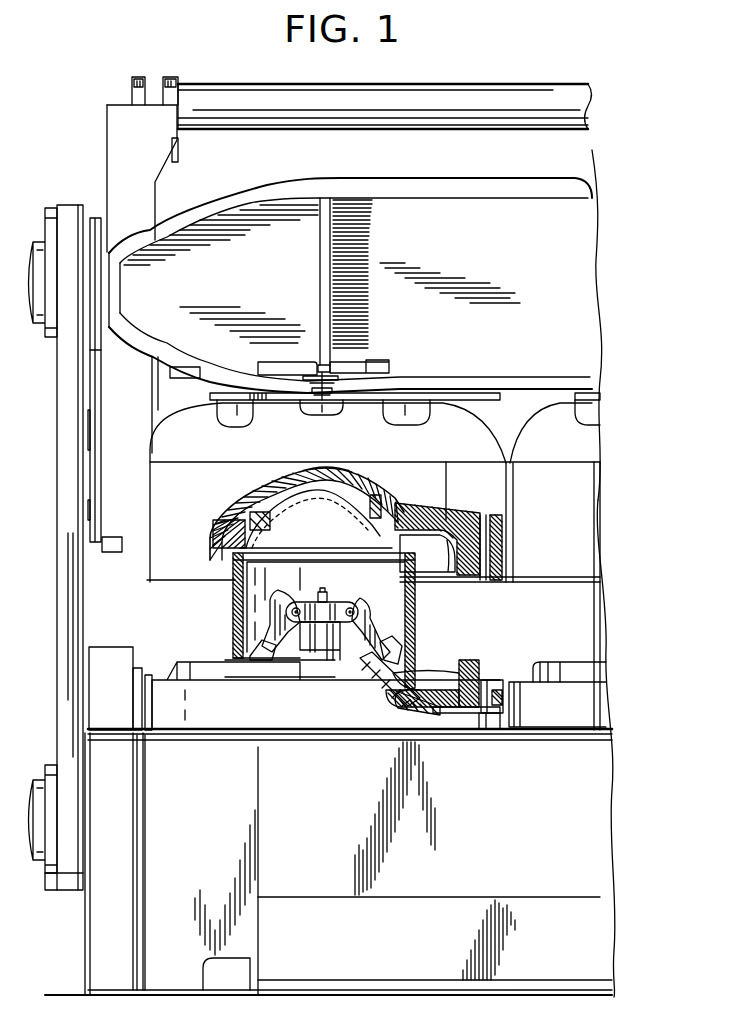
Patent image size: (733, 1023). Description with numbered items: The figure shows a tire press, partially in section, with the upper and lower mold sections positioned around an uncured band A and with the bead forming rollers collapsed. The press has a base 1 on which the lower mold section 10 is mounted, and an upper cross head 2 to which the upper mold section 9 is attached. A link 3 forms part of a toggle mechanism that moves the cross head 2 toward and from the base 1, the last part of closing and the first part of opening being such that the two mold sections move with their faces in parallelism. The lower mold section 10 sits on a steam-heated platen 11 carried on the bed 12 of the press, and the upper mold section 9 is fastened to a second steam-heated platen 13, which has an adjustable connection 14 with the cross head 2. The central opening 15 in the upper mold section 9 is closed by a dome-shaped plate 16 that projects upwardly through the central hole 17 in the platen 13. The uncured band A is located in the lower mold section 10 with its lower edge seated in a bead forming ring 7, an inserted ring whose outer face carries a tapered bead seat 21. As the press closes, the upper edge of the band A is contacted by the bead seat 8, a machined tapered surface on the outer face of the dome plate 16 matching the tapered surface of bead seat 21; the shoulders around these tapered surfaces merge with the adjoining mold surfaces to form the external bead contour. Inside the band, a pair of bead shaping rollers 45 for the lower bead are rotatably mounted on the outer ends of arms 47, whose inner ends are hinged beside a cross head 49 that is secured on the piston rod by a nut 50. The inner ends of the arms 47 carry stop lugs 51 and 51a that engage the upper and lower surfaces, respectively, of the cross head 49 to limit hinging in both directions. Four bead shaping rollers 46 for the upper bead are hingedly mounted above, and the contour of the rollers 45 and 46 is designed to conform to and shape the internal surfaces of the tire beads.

The base 1 is at (598, 852).
The upper cross head 2 is at (580, 298).
The link 3 is at (57, 600).
The bead forming ring 7 is at (425, 680).
The bead seat 8 is at (402, 537).
The upper mold section 9 is at (462, 548).
The lower mold section 10 is at (473, 666).
The steam-heated platen 11 is at (470, 716).
The bed 12 is at (590, 733).
The heated platen 13 is at (390, 511).
The adjustable connection 14 is at (356, 486).
The central opening 15 is at (256, 522).
The dome-shaped plate 16 is at (362, 508).
The central hole 17 is at (270, 496).
The bead seat 21 is at (382, 690).
The bead shaping rollers 45 is at (408, 667).
The bead shaping rollers 46 is at (240, 634).
The arms 47 is at (277, 612).
The cross head 49 is at (342, 606).
The nut 50 is at (318, 600).
The stop lug 51 is at (284, 600).
The stop lug 51a is at (301, 624).
The uncured band A is at (410, 628).